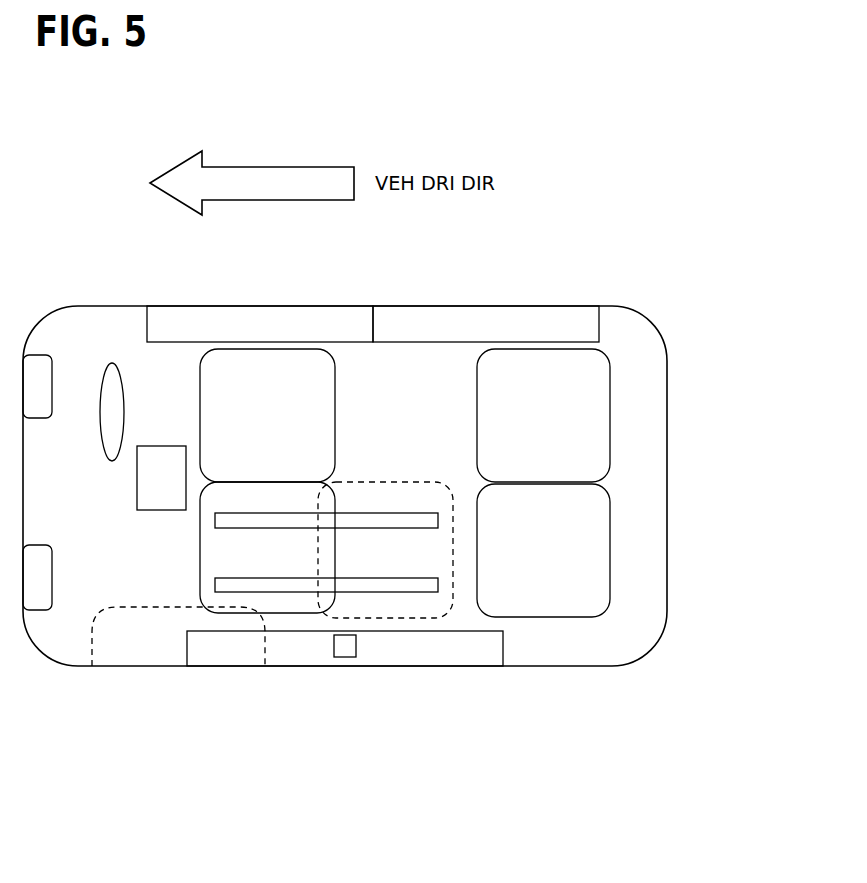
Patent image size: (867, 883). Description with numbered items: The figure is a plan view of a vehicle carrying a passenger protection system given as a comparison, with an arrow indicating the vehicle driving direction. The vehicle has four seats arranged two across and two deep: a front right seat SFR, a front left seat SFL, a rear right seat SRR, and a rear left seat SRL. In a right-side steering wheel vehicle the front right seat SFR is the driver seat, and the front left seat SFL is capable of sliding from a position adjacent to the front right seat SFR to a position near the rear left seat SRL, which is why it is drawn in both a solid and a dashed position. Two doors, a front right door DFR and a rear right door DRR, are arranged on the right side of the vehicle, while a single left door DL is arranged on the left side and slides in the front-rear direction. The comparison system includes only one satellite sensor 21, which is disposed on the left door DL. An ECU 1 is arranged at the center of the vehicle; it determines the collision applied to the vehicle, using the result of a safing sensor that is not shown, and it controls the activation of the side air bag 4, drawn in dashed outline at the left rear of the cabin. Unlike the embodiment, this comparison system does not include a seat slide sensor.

The ECU 1 is at (158, 466).
The side air bag 4 is at (97, 646).
The satellite sensor 21 is at (345, 650).
The front right door DFR is at (210, 320).
The rear right door DRR is at (540, 327).
The left door DL is at (487, 650).
The front right seat SFR is at (310, 420).
The front left seat SFL is at (287, 497).
The rear right seat SRR is at (575, 383).
The rear left seat SRL is at (582, 546).